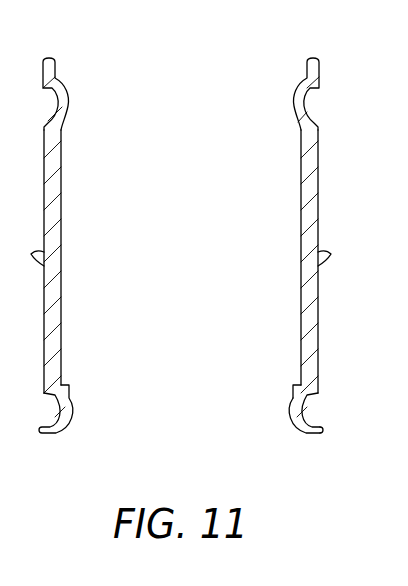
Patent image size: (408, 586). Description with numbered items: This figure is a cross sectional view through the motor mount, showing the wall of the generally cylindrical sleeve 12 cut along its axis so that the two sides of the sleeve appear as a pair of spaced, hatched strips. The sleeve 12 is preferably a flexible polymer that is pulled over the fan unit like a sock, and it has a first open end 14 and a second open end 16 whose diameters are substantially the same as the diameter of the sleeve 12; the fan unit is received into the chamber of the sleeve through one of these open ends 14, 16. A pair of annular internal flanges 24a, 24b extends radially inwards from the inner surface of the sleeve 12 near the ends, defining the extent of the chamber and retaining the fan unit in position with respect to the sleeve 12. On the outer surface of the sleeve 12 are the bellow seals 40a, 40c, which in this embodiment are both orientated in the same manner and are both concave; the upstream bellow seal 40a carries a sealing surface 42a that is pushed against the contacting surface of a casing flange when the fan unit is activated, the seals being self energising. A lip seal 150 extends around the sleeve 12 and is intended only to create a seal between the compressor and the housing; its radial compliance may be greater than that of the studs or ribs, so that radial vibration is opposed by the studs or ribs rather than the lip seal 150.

The sleeve 12 is at (311, 272).
The first open end 14 is at (182, 430).
The second open end 16 is at (183, 72).
The flange 24a is at (296, 388).
The flange 24b is at (61, 136).
The bellow seal 40a is at (320, 431).
The bellow seal 40c is at (297, 92).
The sealing surface 42a is at (316, 436).
The lip seal 150 is at (330, 256).